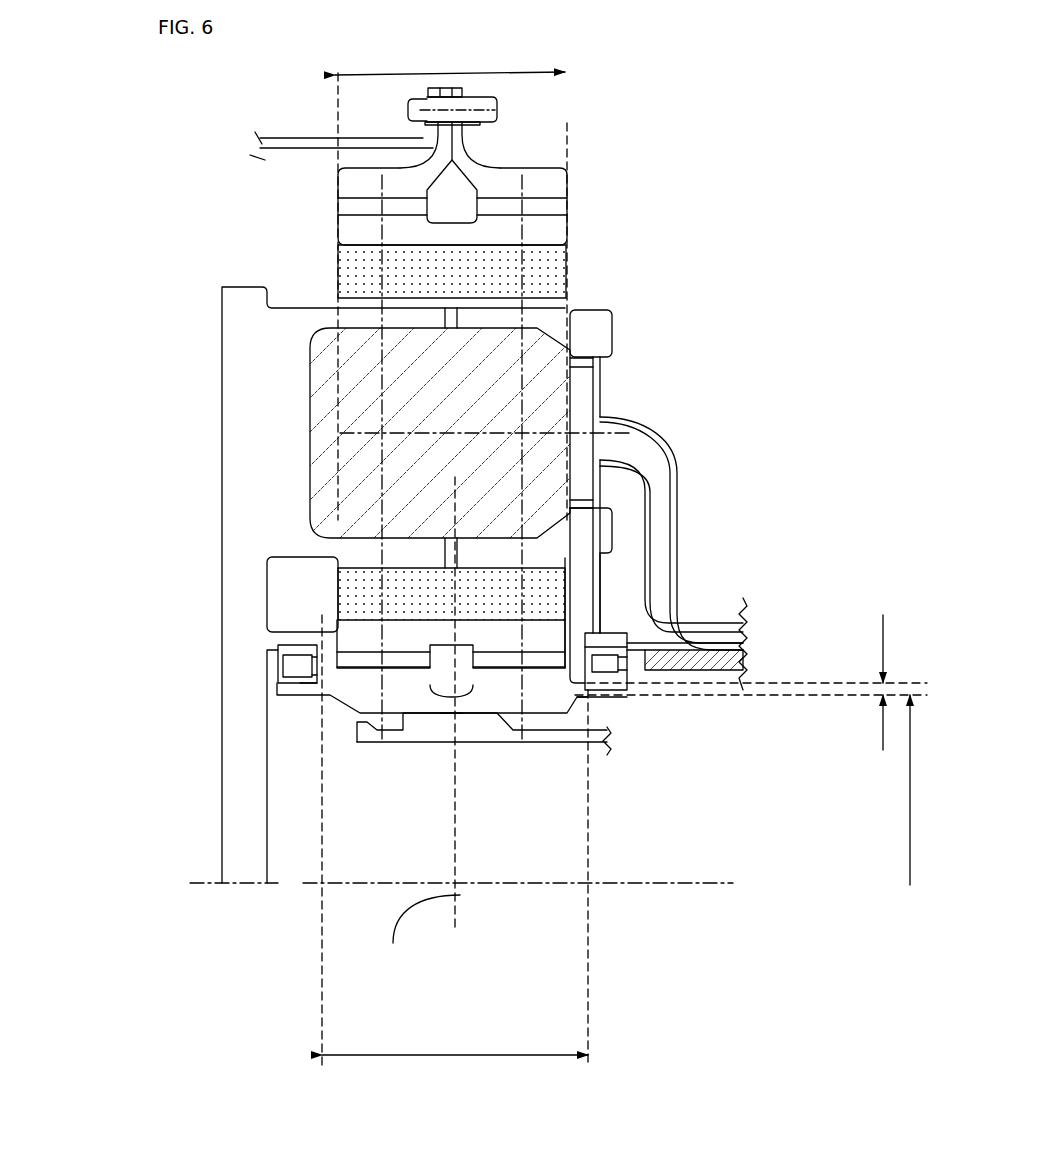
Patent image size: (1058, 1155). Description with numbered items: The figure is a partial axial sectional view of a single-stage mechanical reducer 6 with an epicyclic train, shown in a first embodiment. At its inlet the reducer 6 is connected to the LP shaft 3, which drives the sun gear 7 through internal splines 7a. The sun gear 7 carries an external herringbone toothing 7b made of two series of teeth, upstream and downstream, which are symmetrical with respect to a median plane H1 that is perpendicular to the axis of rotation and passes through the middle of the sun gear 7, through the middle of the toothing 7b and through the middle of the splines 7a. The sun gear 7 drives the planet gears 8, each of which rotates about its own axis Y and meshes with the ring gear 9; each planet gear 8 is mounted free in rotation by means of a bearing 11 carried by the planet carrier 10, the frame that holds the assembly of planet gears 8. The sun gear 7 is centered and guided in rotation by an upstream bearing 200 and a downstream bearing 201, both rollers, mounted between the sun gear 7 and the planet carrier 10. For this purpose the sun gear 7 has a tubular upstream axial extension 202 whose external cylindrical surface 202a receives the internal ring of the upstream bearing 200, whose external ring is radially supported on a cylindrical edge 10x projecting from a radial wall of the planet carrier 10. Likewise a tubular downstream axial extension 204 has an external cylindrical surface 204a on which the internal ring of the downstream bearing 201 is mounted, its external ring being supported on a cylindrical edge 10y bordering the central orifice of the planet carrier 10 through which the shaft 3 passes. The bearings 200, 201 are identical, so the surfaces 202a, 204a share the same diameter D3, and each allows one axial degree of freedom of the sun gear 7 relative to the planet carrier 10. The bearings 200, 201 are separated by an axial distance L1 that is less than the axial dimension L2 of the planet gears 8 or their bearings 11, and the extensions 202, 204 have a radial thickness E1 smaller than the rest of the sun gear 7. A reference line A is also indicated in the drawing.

The LP shaft 3 is at (557, 738).
The reducer 6 is at (660, 342).
The sun gear 7 is at (400, 712).
The internal splines 7a is at (448, 722).
The external herringbone toothing 7b is at (492, 663).
The planet gears 8 is at (533, 225).
The ring gear 9 is at (547, 185).
The planet carrier 10 is at (223, 392).
The cylindrical edge 10x is at (293, 645).
The cylindrical edge 10y is at (593, 687).
The bearing 11 is at (347, 288).
The upstream bearing 200 is at (300, 667).
The downstream bearing 201 is at (607, 687).
The upstream axial extension 202 is at (313, 687).
The external cylindrical surface 202a is at (310, 683).
The downstream axial extension 204 is at (607, 645).
The external cylindrical surface 204a is at (648, 665).
The axis Y is at (467, 433).
The reference line A is at (653, 880).
The axial distance L1 is at (455, 1076).
The axial dimension L2 is at (450, 92).
The median plane H1 is at (422, 935).
The radial thickness E1 is at (901, 682).
The diameter D3 is at (931, 790).